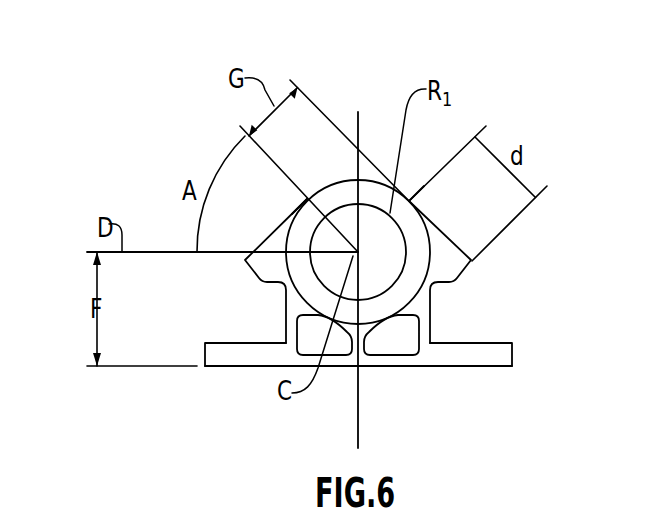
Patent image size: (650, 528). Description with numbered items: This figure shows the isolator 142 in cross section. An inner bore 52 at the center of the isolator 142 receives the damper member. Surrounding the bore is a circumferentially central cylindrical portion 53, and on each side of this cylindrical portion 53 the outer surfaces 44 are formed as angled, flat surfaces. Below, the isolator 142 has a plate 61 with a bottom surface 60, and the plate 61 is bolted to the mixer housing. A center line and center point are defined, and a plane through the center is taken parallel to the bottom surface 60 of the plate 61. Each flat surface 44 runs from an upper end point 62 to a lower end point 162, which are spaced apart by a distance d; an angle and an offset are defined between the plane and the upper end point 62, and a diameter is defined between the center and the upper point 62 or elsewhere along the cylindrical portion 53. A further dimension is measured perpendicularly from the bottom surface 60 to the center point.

The isolator 142 is at (148, 143).
The circumferentially central cylindrical portion 53 is at (372, 180).
The inner bore 52 is at (343, 216).
The outer surfaces 44 is at (264, 246).
The lower end point 162 is at (472, 272).
The end point 62 is at (306, 199).
The plate 61 is at (226, 350).
The bottom surface 60 is at (417, 367).